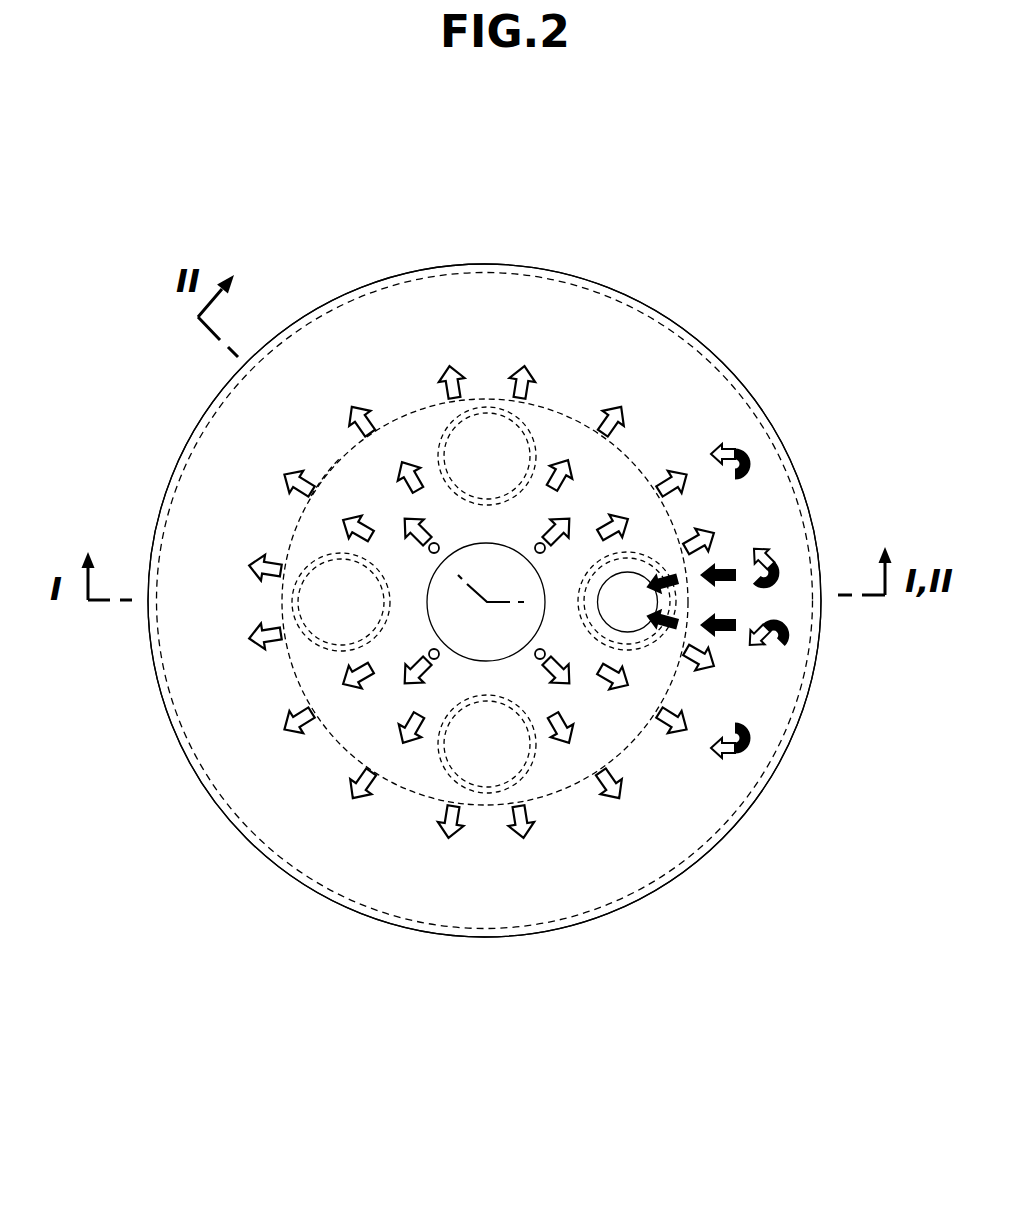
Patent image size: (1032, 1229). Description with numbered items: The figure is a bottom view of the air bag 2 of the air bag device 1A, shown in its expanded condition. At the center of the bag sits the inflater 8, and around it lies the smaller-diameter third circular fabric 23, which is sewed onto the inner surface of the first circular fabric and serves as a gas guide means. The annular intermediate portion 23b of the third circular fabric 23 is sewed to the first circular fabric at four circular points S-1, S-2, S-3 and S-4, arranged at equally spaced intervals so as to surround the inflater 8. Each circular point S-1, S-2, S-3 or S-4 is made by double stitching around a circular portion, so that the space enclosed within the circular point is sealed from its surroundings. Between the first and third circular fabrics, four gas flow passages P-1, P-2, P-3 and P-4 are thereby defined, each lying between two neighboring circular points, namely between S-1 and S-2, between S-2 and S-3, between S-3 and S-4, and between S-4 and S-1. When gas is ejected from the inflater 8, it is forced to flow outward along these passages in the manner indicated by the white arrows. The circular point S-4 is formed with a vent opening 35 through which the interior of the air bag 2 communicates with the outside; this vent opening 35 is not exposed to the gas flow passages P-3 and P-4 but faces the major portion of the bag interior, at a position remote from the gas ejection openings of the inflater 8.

The air bag device 1A is at (806, 231).
The air bag 2 is at (793, 443).
The inflater 8 is at (503, 543).
The third circular fabric 23 is at (617, 437).
The annular intermediate portion 23b is at (353, 473).
The vent opening 35 is at (620, 578).
The circular point S-1 is at (483, 408).
The circular point S-2 is at (317, 563).
The circular point S-3 is at (487, 793).
The circular point S-4 is at (642, 647).
The gas flow passage P-1 is at (383, 517).
The gas flow passage P-2 is at (403, 685).
The gas flow passage P-3 is at (577, 687).
The gas flow passage P-4 is at (570, 515).